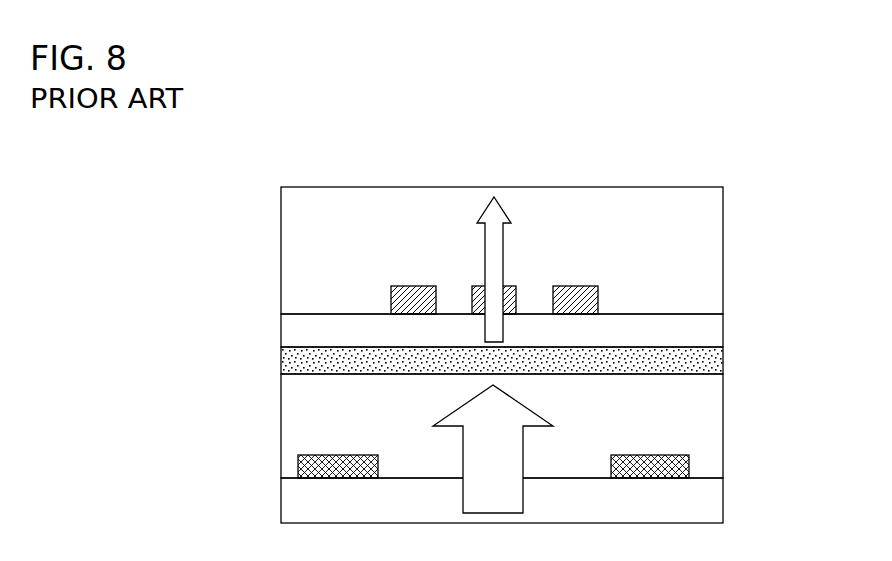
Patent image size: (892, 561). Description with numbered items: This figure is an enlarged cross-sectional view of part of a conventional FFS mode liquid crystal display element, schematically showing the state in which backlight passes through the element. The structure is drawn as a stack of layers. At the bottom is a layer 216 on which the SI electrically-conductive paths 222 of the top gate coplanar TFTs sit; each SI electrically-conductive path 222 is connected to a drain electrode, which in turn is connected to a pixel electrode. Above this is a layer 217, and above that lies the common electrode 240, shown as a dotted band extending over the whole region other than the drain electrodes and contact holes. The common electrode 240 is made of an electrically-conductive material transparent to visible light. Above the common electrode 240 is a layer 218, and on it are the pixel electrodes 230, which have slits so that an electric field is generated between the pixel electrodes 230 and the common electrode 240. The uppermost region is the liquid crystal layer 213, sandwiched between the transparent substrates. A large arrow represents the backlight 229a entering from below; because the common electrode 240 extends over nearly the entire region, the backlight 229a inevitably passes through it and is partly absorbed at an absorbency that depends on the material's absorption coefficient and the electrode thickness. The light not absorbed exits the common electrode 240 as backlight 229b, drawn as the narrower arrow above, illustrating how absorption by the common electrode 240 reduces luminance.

The liquid crystal layer 213 is at (716, 250).
The second electrode layer 218 is at (716, 330).
The common electrode 240 is at (716, 360).
The first substrate 217 is at (716, 417).
The first electrode layer 216 is at (716, 500).
The pixel electrode 230 is at (411, 286).
The backlight 229b is at (497, 255).
The SI electrically-conductive path 222 is at (298, 466).
The backlight 229a is at (513, 450).